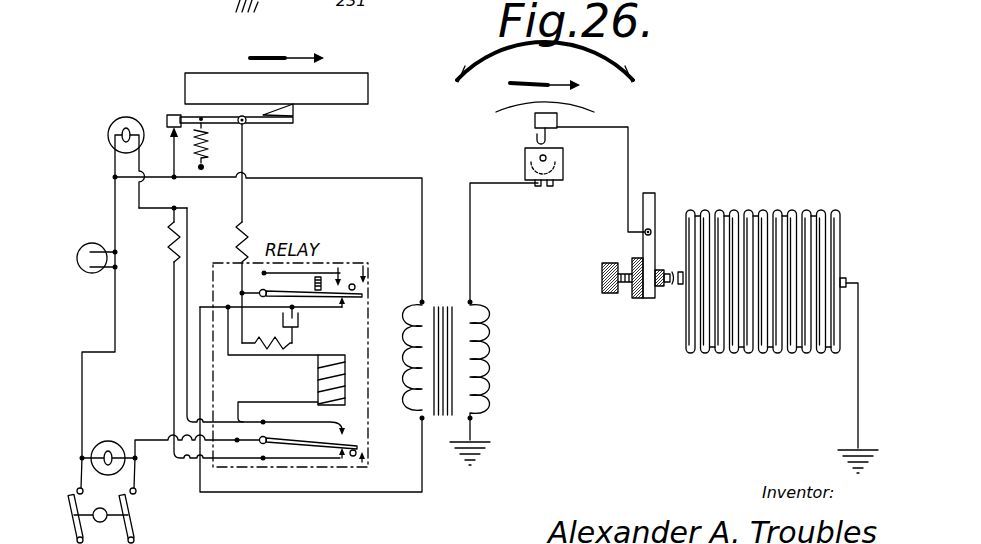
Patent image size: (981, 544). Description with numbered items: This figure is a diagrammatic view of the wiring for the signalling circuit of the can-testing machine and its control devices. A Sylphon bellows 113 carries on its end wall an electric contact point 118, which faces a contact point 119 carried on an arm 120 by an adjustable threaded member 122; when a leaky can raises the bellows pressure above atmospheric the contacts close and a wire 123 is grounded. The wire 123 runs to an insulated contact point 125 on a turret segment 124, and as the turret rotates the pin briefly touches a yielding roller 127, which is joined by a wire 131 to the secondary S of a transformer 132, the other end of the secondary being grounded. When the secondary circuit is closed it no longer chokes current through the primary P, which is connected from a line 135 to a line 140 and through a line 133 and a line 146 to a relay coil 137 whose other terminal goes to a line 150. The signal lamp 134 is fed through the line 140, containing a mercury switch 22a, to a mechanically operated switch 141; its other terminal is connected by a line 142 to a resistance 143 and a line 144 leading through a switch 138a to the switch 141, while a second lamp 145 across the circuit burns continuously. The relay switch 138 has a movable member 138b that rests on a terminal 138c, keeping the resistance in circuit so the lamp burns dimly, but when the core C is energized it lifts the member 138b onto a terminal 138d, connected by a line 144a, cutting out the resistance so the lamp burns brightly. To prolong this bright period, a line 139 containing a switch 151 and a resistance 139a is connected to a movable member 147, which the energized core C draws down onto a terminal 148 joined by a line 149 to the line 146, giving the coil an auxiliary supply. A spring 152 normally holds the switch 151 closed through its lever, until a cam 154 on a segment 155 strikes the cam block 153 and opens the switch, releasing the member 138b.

The lamp 134 is at (115, 130).
The switch 151 is at (173, 115).
The spring 152 is at (210, 145).
The cam block 153 is at (293, 116).
The cam 154 is at (267, 110).
The segment 155 is at (333, 93).
The segment 124 is at (500, 108).
The contact point 125 is at (535, 133).
The roller 127 is at (527, 150).
The wire 123 is at (600, 127).
The arm 120 is at (648, 212).
The threaded member 122 is at (632, 265).
The contact point 119 is at (645, 290).
The contact point 118 is at (670, 290).
The Sylphon bellows 113 is at (758, 323).
The wire 131 is at (470, 245).
The transformer 132 is at (470, 302).
The line 140 is at (115, 206).
The mercury switch 22a is at (90, 246).
The resistance 143 is at (168, 245).
The line 142 is at (139, 206).
The line 144 is at (170, 305).
The line 144a is at (185, 322).
The line 150 is at (157, 447).
The second lamp 145 is at (113, 467).
The mechanically operated switch 141 is at (128, 505).
The line 135 is at (377, 181).
The line 133 is at (355, 492).
The line 139 is at (244, 199).
The resistance 139a is at (258, 222).
The switch 138 is at (338, 272).
The terminal 148 is at (344, 302).
The movable member 147 is at (298, 292).
The line 149 is at (315, 325).
The line 146 is at (300, 352).
The relay coil 137 is at (337, 355).
The terminal 138d is at (345, 422).
The movable member 138b is at (303, 443).
The switch 138a is at (357, 445).
The terminal 138c is at (345, 457).
The primary P is at (407, 365).
The secondary S is at (478, 355).
The core C is at (337, 380).